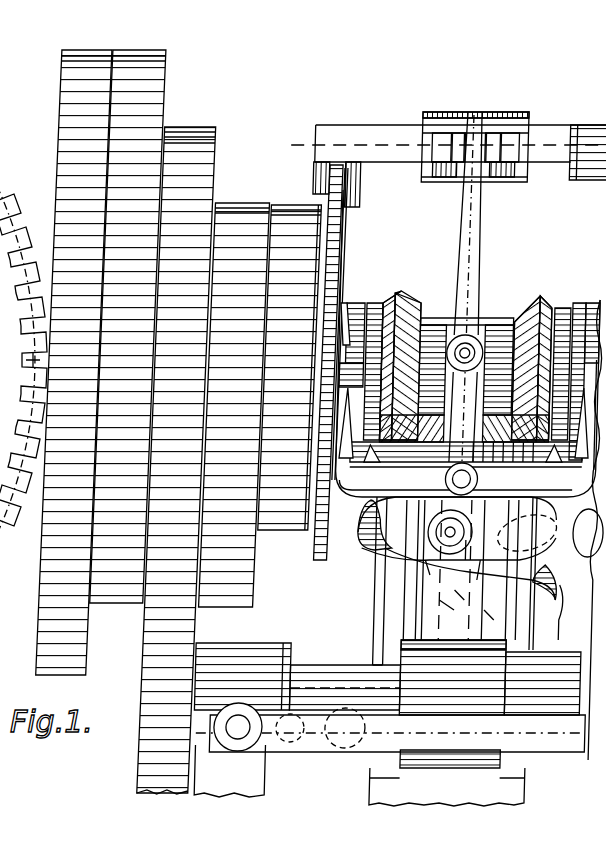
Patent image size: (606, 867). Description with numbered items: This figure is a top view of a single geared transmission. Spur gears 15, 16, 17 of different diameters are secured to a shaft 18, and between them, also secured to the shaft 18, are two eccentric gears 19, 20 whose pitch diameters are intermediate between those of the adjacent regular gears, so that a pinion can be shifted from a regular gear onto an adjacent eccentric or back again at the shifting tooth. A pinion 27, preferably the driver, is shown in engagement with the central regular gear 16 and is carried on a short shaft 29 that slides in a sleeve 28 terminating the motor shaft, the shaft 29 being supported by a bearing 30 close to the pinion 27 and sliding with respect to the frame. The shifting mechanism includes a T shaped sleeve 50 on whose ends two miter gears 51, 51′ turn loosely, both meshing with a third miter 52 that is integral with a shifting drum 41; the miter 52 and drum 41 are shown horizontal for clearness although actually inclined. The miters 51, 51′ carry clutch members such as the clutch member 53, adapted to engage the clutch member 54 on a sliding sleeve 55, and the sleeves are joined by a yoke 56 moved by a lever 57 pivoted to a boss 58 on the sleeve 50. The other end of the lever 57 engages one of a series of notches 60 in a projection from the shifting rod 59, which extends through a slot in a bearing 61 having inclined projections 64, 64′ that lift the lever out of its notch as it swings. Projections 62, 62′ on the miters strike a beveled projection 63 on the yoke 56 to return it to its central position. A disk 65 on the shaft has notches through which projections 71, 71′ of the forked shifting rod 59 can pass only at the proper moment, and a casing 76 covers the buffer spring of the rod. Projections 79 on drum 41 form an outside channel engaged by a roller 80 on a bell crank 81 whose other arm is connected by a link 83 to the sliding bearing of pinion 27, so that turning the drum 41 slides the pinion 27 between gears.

The spur gear 15 is at (289, 213).
The central regular gear 16 is at (186, 124).
The spur gear 17 is at (78, 51).
The shaft 18 is at (46, 302).
The eccentric gear 19 is at (237, 209).
The eccentric gear 20 is at (141, 56).
The pinion 27 is at (158, 714).
The sleeve 28 is at (541, 670).
The short shaft 29 is at (336, 680).
The bearing 30 is at (279, 750).
The shifting drum 41 is at (394, 608).
The T shaped sleeve 50 is at (499, 358).
The miter gear 51 is at (403, 300).
The miter gear 51′ is at (537, 316).
The miter 52 is at (466, 452).
The clutch member 53 is at (380, 312).
The clutch member 54 is at (467, 475).
The sleeve 55 is at (347, 300).
The yoke 56 is at (515, 453).
The lever 57 is at (464, 368).
The boss 58 is at (468, 291).
The shifting rod 59 is at (555, 134).
The notches 60 is at (510, 141).
The bearing 61 is at (514, 127).
The projection 62 is at (463, 467).
The projection 62′ is at (542, 481).
The beveled projection 63 is at (464, 440).
The inclined projection 64 is at (444, 176).
The inclined projection 64′ is at (512, 176).
The disk 65 is at (346, 238).
The projection 71 is at (320, 175).
The projection 71′ is at (357, 186).
The casing 76 is at (593, 176).
The projections 79 is at (400, 520).
The roller 80 is at (472, 532).
The bell crank 81 is at (600, 566).
The link 83 is at (390, 733).